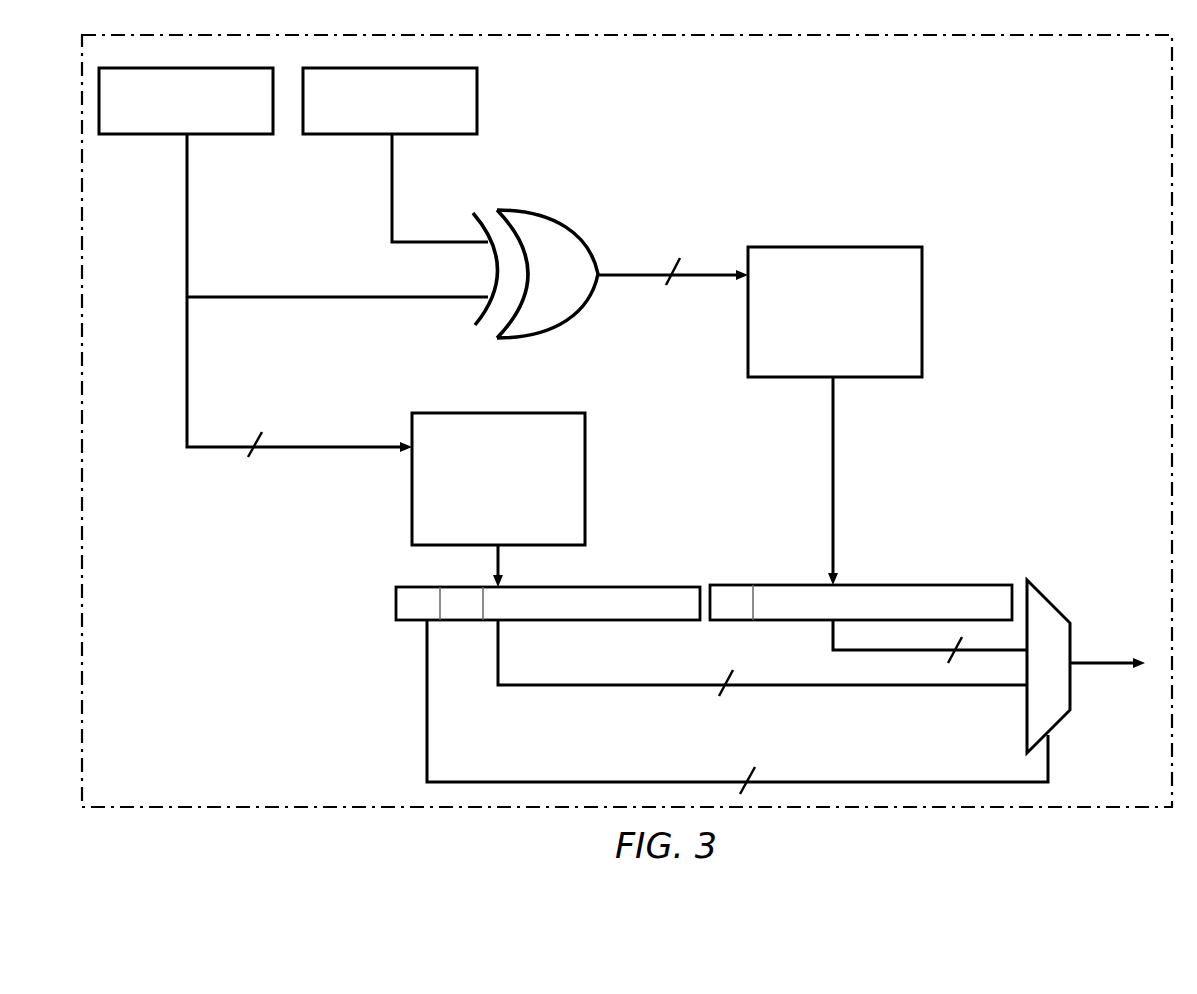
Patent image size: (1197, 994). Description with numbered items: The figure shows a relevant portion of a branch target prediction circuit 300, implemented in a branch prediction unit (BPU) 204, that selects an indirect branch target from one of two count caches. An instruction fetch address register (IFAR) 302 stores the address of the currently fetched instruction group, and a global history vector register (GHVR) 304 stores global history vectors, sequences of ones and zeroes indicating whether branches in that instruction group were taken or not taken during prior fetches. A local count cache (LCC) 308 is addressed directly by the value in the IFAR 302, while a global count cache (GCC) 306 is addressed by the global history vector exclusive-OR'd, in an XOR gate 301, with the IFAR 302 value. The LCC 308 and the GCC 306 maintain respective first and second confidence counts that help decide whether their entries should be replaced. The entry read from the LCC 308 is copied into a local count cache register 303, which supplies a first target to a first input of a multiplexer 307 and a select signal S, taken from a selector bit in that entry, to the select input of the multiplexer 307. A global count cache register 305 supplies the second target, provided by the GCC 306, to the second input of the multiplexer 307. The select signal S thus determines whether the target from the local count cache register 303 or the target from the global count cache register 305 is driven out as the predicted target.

The branch prediction unit (BPU) 204 is at (1020, 111).
The branch target prediction circuit 300 is at (1068, 224).
The XOR gate 301 is at (576, 286).
The instruction fetch address register (IFAR) 302 is at (231, 116).
The local count cache register 303 is at (622, 586).
The global history vector register (GHVR) 304 is at (440, 116).
The global count cache register 305 is at (912, 585).
The global count cache (GCC) 306 is at (877, 287).
The multiplexer 307 is at (1067, 676).
The local count cache (LCC) 308 is at (538, 461).